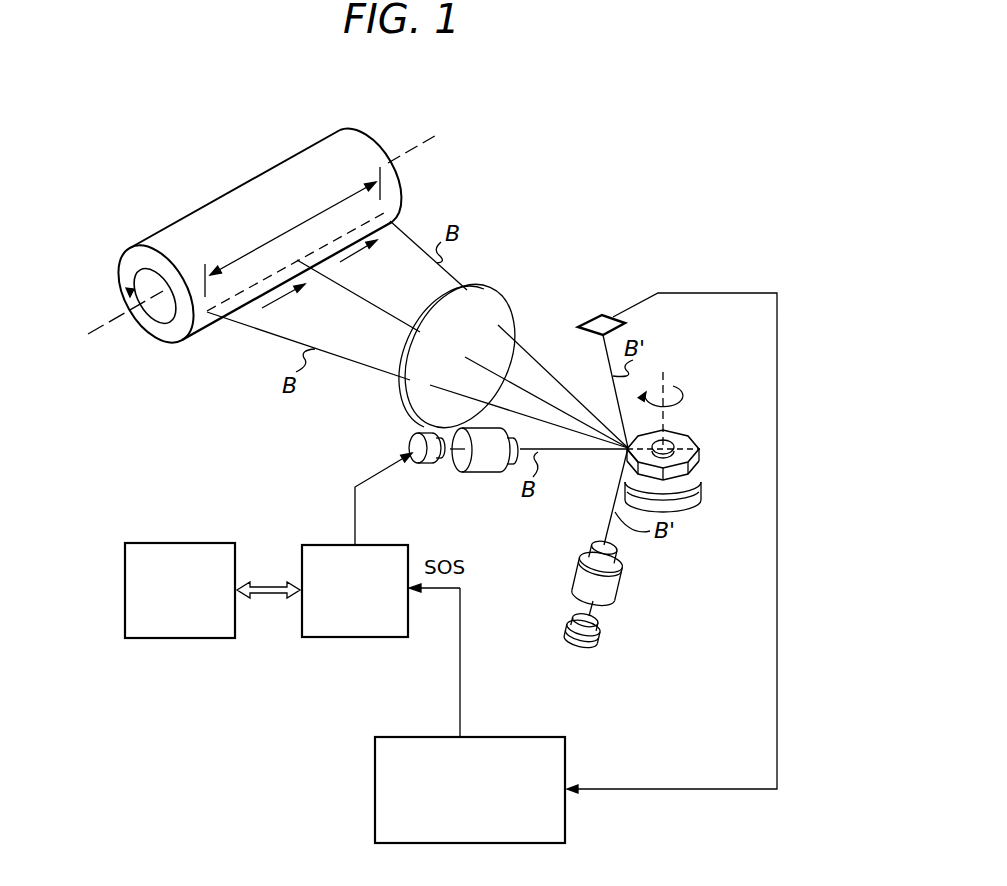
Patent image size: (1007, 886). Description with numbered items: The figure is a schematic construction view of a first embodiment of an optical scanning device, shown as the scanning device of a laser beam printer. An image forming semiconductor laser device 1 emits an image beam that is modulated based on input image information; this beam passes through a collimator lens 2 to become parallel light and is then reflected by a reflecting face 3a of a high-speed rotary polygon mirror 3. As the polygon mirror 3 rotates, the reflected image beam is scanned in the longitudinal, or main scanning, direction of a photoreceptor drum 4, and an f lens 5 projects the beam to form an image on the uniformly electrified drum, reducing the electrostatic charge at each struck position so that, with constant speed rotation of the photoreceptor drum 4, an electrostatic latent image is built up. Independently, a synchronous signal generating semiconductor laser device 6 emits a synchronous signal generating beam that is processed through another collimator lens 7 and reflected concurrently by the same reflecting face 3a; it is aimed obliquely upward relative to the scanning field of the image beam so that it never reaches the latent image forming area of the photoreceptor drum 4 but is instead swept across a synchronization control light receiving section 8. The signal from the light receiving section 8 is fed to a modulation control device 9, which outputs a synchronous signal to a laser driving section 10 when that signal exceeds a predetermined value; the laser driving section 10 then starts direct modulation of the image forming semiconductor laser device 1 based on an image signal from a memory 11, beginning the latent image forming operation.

The image forming semiconductor laser device 1 is at (423, 467).
The collimator lens 2 is at (483, 474).
The polygon mirror 3 is at (683, 442).
The reflecting face 3a is at (632, 458).
The photoreceptor drum 4 is at (250, 182).
The f lens 5 is at (515, 297).
The synchronous signal generating semiconductor laser device 6 is at (601, 638).
The collimator lens 7 is at (613, 582).
The synchronization control light receiving section 8 is at (602, 315).
The modulation control device 9 is at (526, 736).
The laser driving section 10 is at (323, 543).
The memory 11 is at (170, 542).